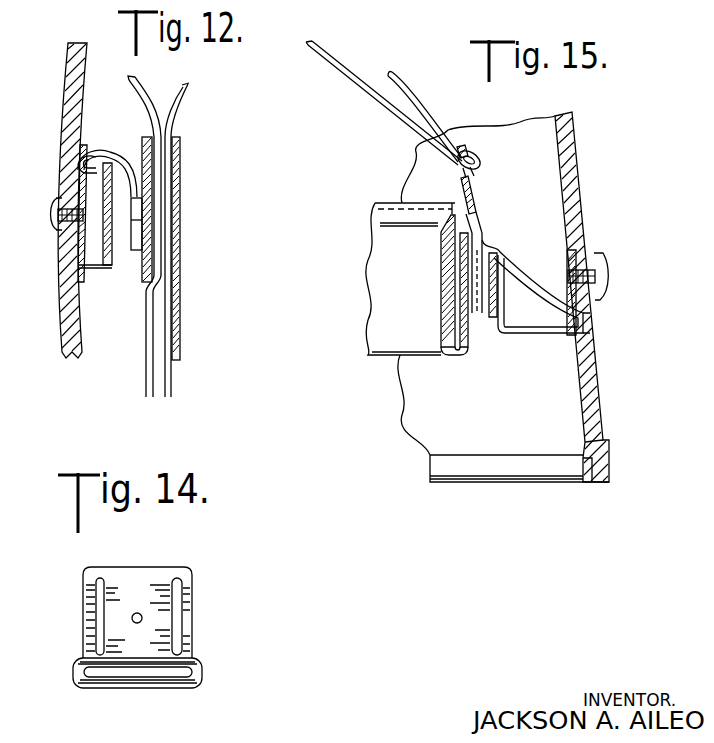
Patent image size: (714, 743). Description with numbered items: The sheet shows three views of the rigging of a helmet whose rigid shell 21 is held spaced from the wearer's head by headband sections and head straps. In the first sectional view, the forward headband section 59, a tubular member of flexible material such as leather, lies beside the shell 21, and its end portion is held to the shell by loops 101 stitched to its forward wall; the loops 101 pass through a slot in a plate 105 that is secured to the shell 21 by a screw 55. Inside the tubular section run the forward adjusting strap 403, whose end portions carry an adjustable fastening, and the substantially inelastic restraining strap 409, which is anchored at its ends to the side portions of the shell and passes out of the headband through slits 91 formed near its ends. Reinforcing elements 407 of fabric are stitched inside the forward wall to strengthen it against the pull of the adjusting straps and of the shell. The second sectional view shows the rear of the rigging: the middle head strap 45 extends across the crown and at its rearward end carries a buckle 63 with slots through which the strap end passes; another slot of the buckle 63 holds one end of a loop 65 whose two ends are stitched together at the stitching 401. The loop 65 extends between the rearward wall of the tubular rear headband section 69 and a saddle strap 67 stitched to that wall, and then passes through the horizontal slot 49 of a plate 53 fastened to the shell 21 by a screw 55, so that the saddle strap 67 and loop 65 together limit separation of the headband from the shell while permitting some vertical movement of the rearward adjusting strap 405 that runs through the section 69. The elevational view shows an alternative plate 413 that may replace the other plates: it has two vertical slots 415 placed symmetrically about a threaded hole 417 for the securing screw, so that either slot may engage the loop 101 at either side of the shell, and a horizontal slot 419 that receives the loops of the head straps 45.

In FIG. 12, the shell 21 is at (62, 125).
In FIG. 15, the shell 21 is at (577, 172).
In FIG. 12, the head straps 45 is at (118, 268).
In FIG. 15, the head straps 45 is at (352, 72).
In FIG. 15, the slot 49 is at (592, 313).
In FIG. 15, the plate 53 is at (565, 250).
In FIG. 12, the screw 55 is at (50, 222).
In FIG. 15, the screw 55 is at (606, 270).
In FIG. 12, the forward headband section 59 is at (181, 282).
In FIG. 15, the buckle 63 is at (461, 150).
In FIG. 15, the loop 65 is at (550, 325).
In FIG. 15, the saddle strap 67 is at (502, 305).
In FIG. 15, the rear headband section 69 is at (385, 285).
In FIG. 12, the slits 91 is at (148, 287).
In FIG. 12, the loops 101 is at (131, 150).
In FIG. 12, the plate 105 is at (62, 250).
In FIG. 15, the stitching 401 is at (485, 240).
In FIG. 12, the forward adjusting strap 403 is at (188, 93).
In FIG. 15, the rearward adjusting strap 405 is at (458, 312).
In FIG. 12, the reinforcing elements 407 is at (150, 130).
In FIG. 12, the restraining strap 409 is at (133, 78).
In FIG. 14, the plate 413 is at (155, 567).
In FIG. 14, the vertical slots 415 is at (95, 613).
In FIG. 14, the threaded hole 417 is at (141, 620).
In FIG. 14, the horizontal slot 419 is at (148, 677).